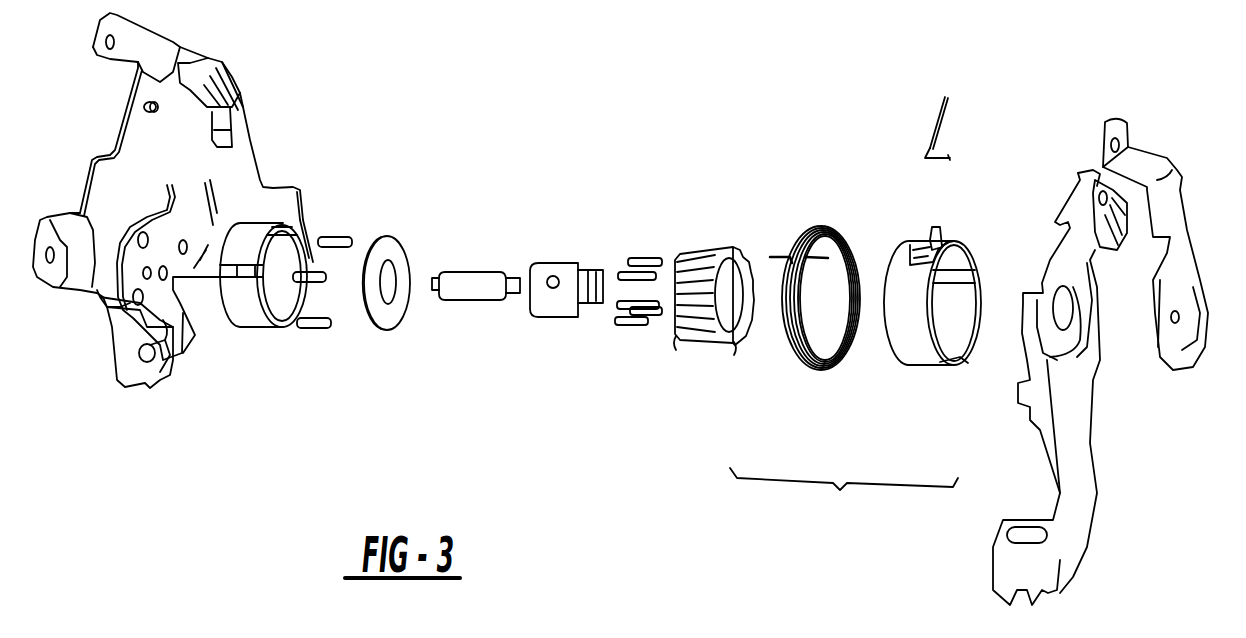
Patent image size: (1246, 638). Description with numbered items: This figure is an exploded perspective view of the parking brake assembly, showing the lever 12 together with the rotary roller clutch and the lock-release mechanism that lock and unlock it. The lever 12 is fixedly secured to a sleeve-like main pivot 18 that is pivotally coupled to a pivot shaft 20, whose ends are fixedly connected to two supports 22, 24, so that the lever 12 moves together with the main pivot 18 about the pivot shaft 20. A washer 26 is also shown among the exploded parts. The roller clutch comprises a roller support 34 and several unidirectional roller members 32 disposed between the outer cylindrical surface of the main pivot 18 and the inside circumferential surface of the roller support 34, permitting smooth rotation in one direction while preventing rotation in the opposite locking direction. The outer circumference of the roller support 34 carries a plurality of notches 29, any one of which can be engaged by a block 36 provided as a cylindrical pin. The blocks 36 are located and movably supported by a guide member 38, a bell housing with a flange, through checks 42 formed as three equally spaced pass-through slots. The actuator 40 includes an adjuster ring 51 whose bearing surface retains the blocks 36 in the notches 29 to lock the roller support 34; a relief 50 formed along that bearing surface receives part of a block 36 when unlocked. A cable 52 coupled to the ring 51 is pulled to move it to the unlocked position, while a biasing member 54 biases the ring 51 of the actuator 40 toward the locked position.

The lever 12 is at (1090, 447).
The main pivot 18 is at (570, 263).
The pivot shaft 20 is at (490, 270).
The support 22 is at (115, 153).
The support 24 is at (1187, 200).
The washer 26 is at (400, 247).
The notches 29 is at (683, 337).
The roller members 32 is at (643, 253).
The roller support 34 is at (717, 313).
The block 36 is at (323, 233).
The guide member 38 is at (242, 317).
The actuator 40 is at (844, 495).
The check 42 is at (287, 327).
The relief 50 is at (967, 370).
The ring 51 is at (916, 373).
The cable 52 is at (937, 102).
The biasing member 54 is at (837, 225).